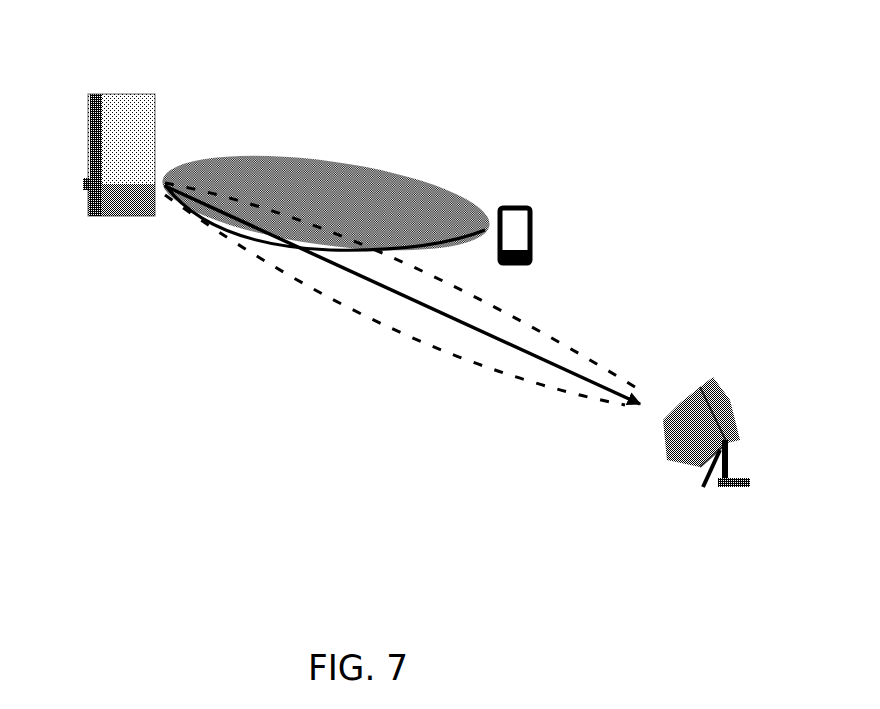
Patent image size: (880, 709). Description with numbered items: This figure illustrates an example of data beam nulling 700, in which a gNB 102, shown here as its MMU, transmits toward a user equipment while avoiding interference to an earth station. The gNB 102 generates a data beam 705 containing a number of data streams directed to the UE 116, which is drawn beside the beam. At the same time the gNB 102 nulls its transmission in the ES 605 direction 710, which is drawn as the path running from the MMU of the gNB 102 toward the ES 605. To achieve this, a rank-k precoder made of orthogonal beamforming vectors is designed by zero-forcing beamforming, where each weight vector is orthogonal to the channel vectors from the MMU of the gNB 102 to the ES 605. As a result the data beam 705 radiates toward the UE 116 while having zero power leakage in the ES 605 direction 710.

The data beam nulling 700 is at (703, 106).
The gNB 102 is at (105, 263).
The data beam 705 is at (393, 180).
The UE 116 is at (527, 206).
The ES direction 710 is at (450, 349).
The ES 605 is at (695, 492).